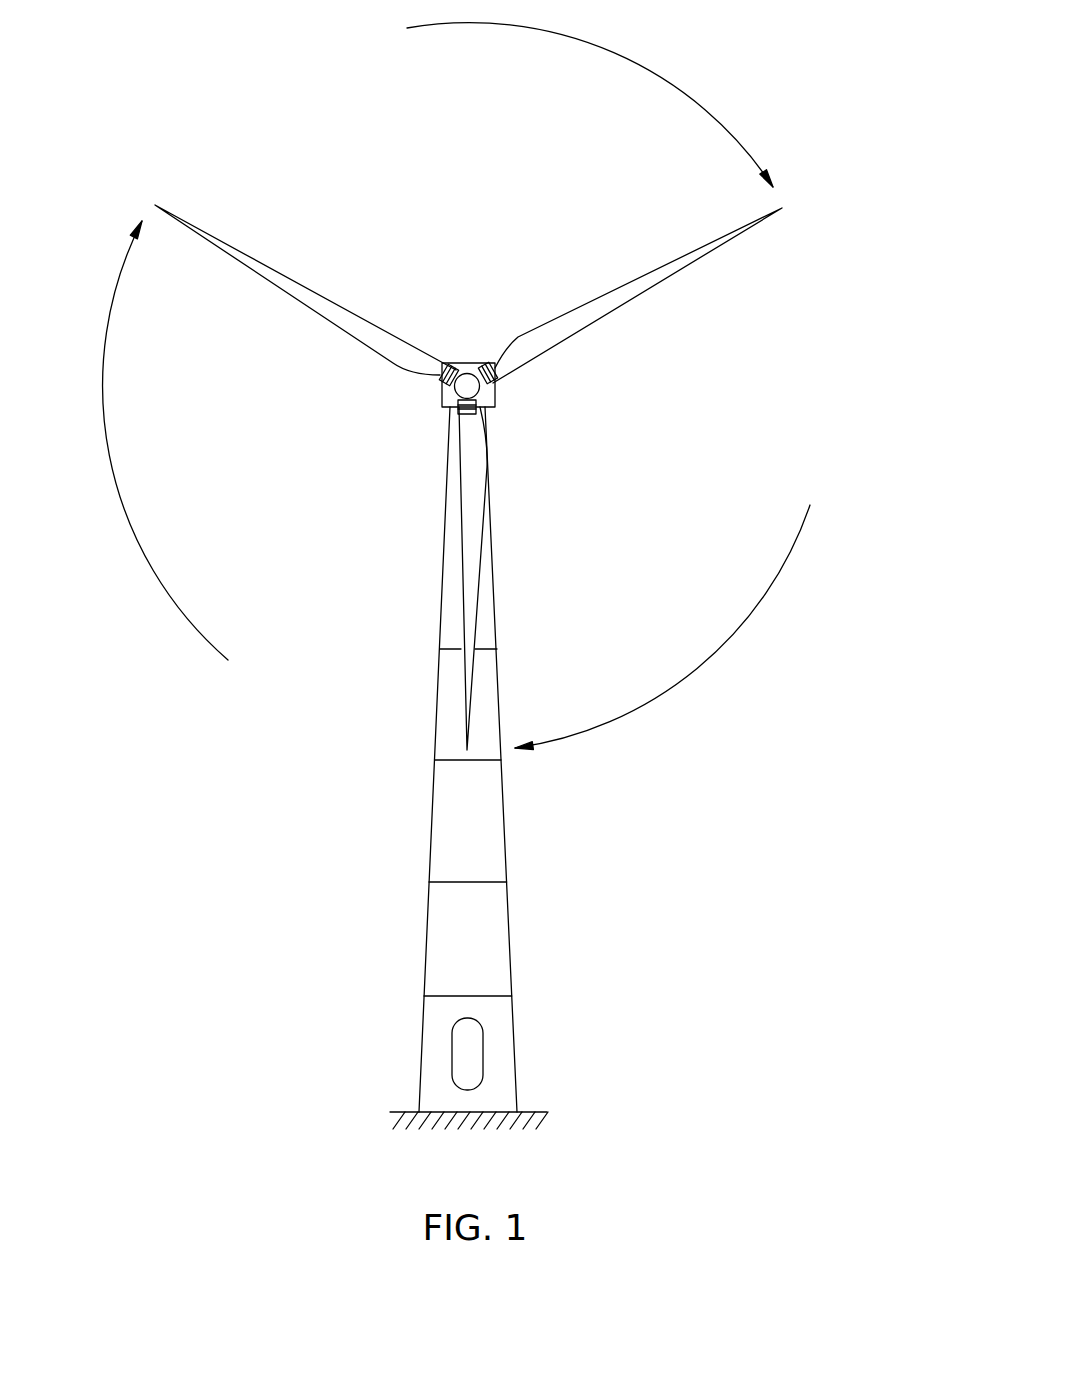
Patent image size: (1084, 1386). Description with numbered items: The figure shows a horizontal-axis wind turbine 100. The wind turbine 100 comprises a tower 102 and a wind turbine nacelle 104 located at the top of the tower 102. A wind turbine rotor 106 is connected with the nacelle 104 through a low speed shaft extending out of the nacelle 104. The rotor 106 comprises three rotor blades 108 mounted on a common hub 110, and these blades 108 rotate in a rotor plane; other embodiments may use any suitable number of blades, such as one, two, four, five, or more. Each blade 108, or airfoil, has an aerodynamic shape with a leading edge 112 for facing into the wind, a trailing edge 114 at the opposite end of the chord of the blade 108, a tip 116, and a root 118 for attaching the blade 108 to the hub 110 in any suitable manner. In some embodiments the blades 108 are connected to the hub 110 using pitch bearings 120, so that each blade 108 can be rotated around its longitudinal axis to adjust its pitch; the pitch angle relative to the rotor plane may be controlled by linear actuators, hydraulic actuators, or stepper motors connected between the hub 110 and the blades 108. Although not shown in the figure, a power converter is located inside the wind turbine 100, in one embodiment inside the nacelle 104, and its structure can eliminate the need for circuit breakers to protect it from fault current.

The wind turbine 100 is at (403, 945).
The tower 102 is at (483, 832).
The wind turbine nacelle 104 is at (495, 403).
The wind turbine rotor 106 is at (412, 395).
The rotor blade 108 is at (267, 287).
The hub 110 is at (467, 386).
The leading edge 112 is at (658, 285).
The trailing edge 114 is at (680, 253).
The tip 116 is at (790, 198).
The root 118 is at (512, 383).
The pitch bearing 120 is at (443, 365).